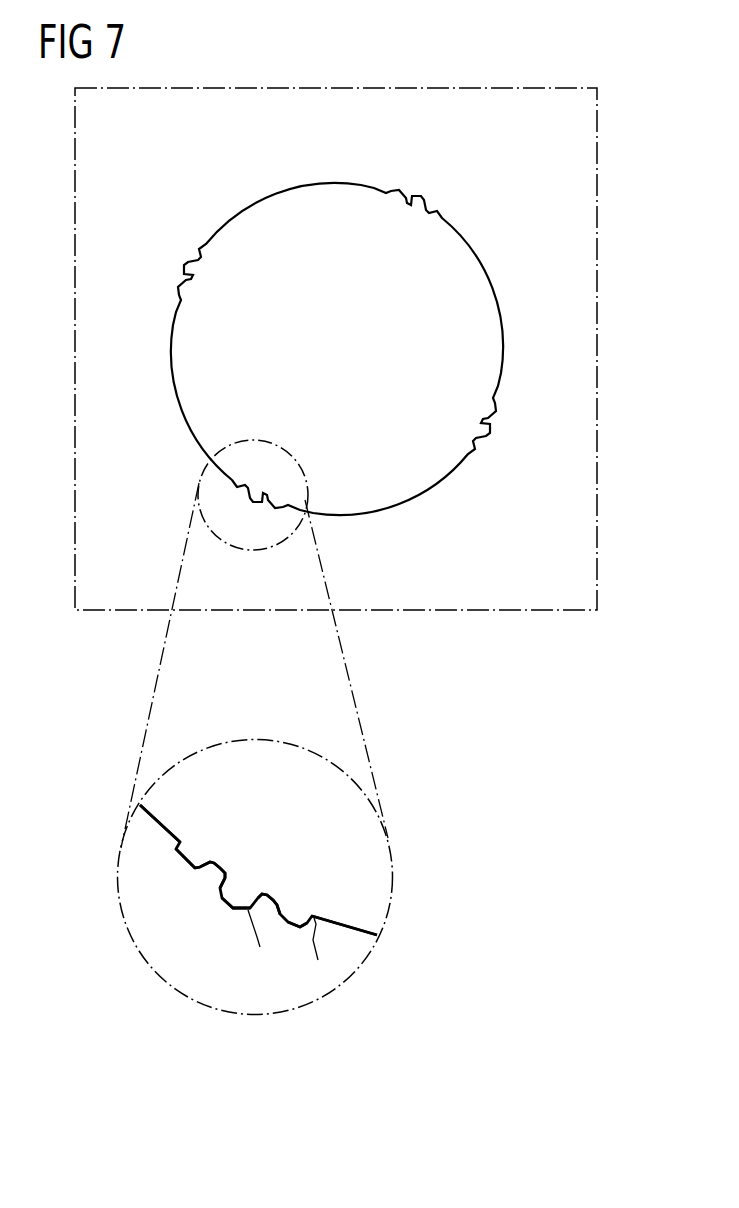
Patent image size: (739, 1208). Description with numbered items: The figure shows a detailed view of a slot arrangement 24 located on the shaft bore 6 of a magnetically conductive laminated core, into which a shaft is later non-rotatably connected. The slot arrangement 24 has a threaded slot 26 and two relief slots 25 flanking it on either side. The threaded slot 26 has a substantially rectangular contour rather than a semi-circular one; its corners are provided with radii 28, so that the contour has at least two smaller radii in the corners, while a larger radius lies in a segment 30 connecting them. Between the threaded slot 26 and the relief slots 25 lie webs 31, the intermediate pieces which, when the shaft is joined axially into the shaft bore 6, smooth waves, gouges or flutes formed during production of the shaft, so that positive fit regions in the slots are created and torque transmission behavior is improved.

The shaft bore 6 is at (375, 885).
The slot arrangement 24 is at (202, 473).
The relief slots 25 is at (198, 846).
The threaded slot 26 is at (247, 880).
The radii 28 is at (173, 846).
The segment 30 is at (193, 867).
The webs 31 is at (215, 872).